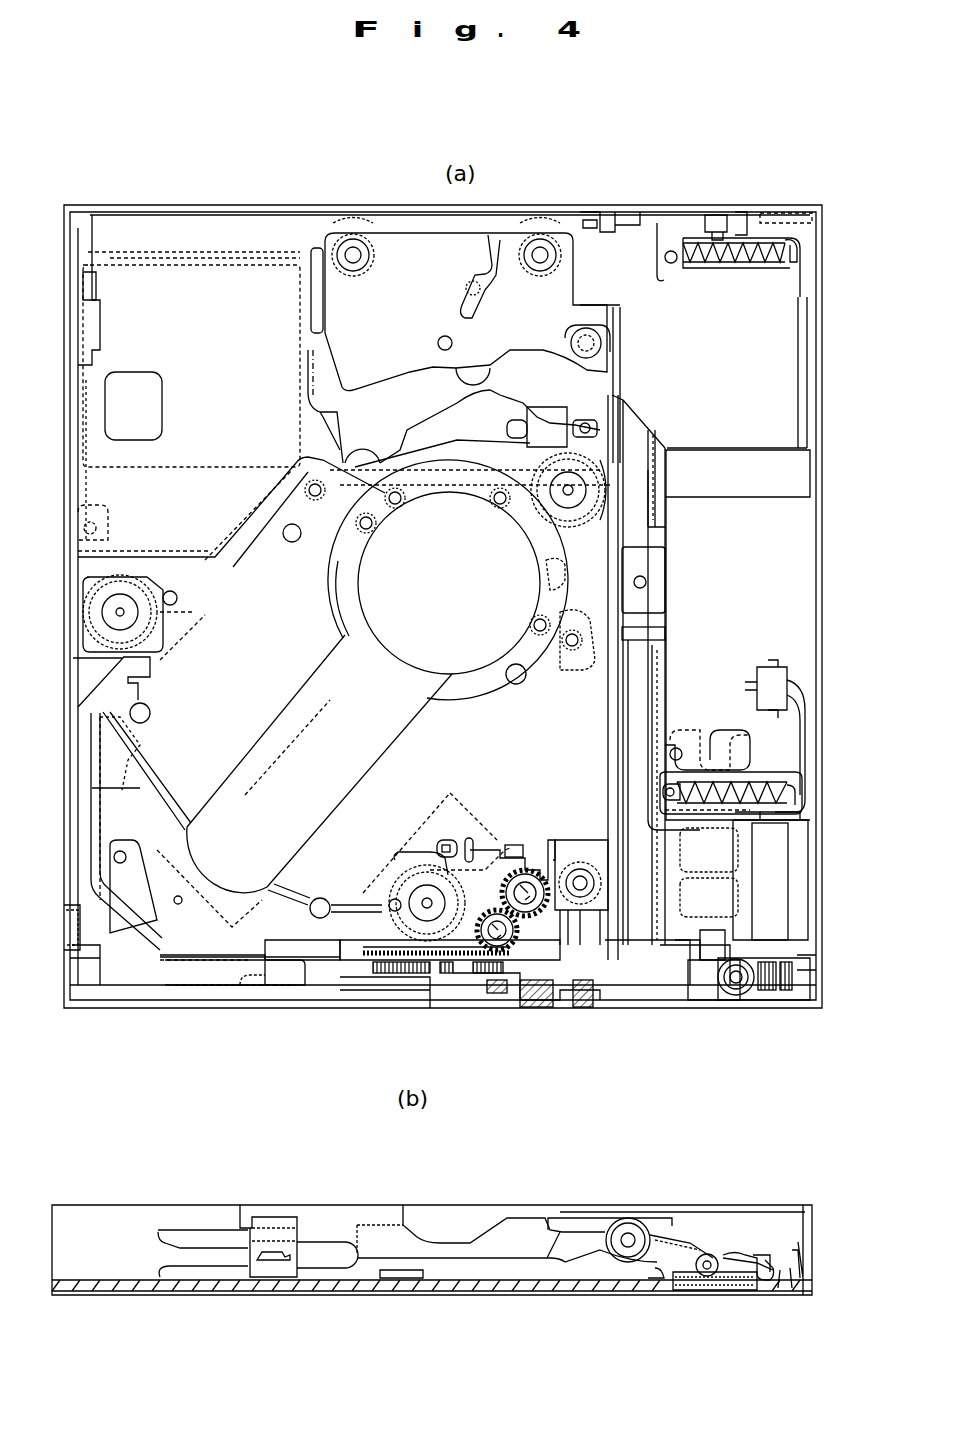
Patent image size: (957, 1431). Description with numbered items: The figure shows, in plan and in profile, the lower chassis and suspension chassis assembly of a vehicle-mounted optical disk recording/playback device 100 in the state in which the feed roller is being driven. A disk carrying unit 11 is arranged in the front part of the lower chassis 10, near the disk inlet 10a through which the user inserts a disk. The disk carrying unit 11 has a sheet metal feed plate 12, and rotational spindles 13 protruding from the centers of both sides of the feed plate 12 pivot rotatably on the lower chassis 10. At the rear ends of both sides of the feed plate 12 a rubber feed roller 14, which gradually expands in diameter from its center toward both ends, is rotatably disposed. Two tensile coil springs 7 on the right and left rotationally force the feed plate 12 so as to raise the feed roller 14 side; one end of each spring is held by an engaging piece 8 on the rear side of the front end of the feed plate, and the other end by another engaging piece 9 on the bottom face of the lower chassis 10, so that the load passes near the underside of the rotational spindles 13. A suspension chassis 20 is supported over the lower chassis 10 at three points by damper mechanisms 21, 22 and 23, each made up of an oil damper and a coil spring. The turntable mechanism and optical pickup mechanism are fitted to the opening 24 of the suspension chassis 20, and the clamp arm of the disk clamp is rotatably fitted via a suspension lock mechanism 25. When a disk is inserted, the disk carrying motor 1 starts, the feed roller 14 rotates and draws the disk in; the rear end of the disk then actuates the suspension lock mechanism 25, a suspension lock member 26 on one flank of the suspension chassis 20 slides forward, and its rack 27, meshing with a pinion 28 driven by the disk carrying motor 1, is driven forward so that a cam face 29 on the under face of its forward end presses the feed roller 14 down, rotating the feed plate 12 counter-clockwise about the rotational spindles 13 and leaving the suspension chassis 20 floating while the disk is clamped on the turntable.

The optical disk recording/playback device 100 is at (570, 204).
The disk carrying motor 1 is at (785, 880).
The tensile coil spring 7 is at (724, 264).
The engaging piece 8 is at (791, 262).
The engaging piece 9 is at (668, 258).
The lower chassis 10 is at (120, 988).
The disk inlet 10a is at (806, 1218).
The disk carrying unit 11 is at (738, 970).
The feed plate 12 is at (672, 912).
The rotational spindle 13 is at (710, 932).
The feed roller 14 is at (625, 905).
The suspension chassis 20 is at (165, 905).
The damper mechanism 21 is at (130, 613).
The damper mechanism 22 is at (565, 492).
The damper mechanism 23 is at (423, 900).
The opening 24 is at (462, 617).
The suspension lock mechanism 25 is at (285, 975).
The suspension lock member 26 is at (340, 955).
The rack 27 is at (420, 950).
The pinion 28 is at (500, 935).
The cam face 29 is at (525, 1282).